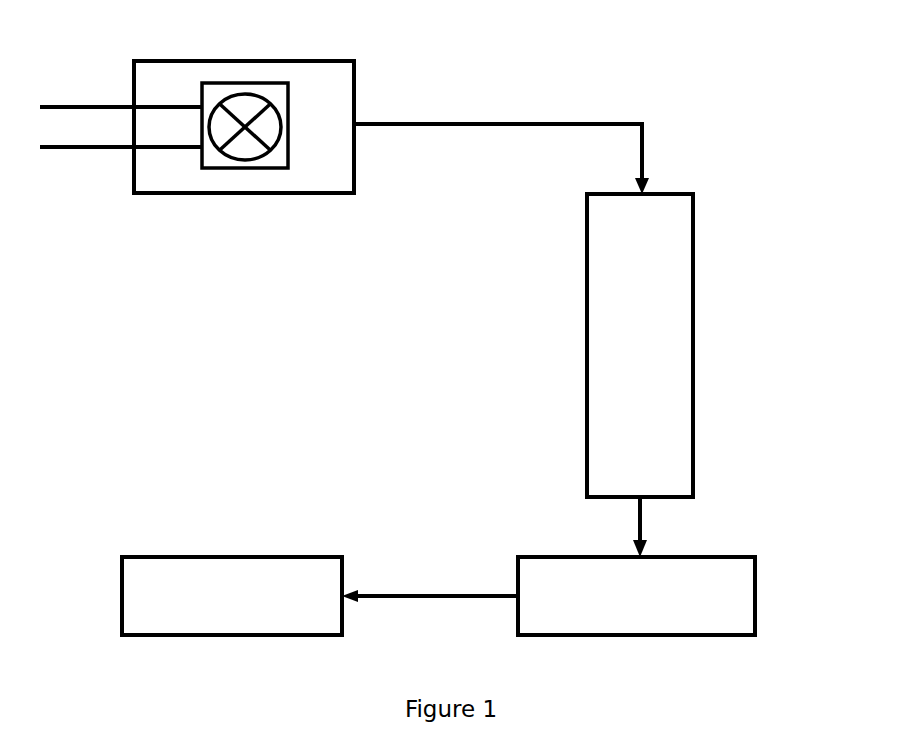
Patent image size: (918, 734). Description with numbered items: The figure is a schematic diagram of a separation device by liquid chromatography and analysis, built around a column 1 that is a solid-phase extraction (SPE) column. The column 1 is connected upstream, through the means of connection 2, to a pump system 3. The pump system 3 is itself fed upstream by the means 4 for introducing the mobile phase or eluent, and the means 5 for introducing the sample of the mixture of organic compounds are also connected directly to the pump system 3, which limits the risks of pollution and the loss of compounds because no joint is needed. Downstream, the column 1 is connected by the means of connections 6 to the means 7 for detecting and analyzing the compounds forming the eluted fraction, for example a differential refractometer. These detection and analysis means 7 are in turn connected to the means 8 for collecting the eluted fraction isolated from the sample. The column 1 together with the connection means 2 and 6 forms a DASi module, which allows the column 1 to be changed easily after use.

The column 1 is at (693, 342).
The means of connection 2 is at (540, 122).
The pump system 3 is at (242, 60).
The means for introducing the mobile phase 4 is at (71, 104).
The means for introducing the sample 5 is at (72, 150).
The means of connections 6 is at (640, 525).
The means for detecting and analyzing 7 is at (755, 595).
The means for collecting the eluted fraction 8 is at (233, 557).